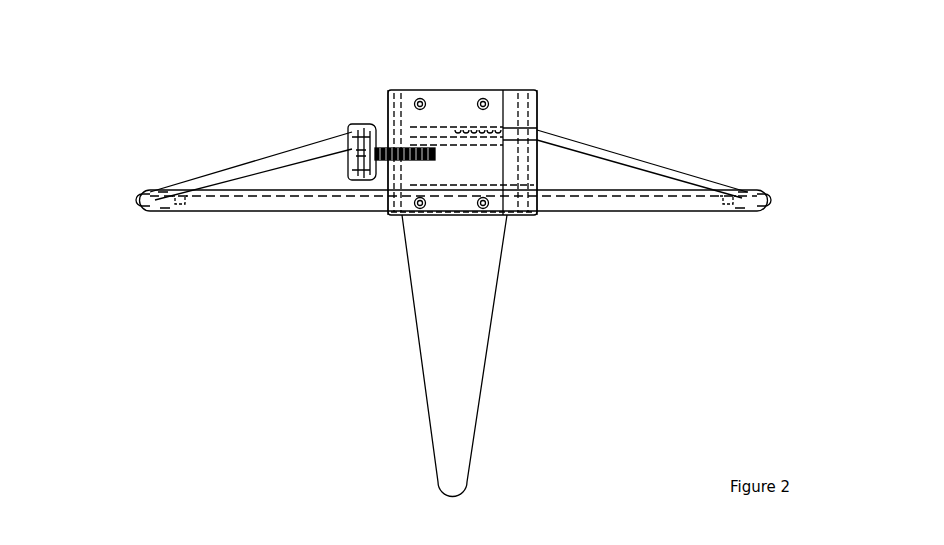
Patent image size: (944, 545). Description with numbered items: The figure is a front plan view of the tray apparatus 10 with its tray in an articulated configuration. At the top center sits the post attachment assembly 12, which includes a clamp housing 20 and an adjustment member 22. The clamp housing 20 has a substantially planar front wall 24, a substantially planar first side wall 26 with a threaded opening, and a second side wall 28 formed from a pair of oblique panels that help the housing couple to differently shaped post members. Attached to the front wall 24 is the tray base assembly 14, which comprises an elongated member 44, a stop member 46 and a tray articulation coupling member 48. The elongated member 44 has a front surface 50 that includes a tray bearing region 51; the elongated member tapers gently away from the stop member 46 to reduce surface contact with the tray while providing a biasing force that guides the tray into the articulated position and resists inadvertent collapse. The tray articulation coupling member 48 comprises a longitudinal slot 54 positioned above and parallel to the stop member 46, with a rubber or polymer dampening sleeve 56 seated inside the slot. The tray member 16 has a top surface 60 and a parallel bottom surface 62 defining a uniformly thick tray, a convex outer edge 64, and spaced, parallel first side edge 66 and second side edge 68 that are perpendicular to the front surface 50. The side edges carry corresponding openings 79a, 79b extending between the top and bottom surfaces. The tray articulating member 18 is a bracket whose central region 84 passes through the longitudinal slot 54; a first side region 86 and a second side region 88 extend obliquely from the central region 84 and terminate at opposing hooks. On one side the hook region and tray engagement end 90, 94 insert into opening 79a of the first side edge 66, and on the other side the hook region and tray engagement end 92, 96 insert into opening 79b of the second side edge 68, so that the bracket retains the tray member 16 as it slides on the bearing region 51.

The tray apparatus 10 is at (652, 120).
The post attachment assembly 12 is at (389, 92).
The tray base assembly 14 is at (424, 425).
The tray member 16 is at (577, 222).
The tray articulating member 18 is at (579, 140).
The clamp housing 20 is at (430, 87).
The adjustment member 22 is at (351, 122).
The front wall 24 is at (456, 80).
The first side wall 26 is at (379, 100).
The second side wall 28 is at (543, 109).
The elongated member 44 is at (479, 378).
The stop member 46 is at (481, 128).
The tray articulation coupling member 48 is at (490, 150).
The front surface 50 is at (431, 274).
The tray bearing region 51 is at (478, 322).
The longitudinal slot 54 is at (447, 120).
The dampening sleeve 56 is at (531, 96).
The top surface 60 is at (649, 163).
The bottom surface 62 is at (612, 213).
The outer edge 64 is at (318, 207).
The first side edge 66 is at (737, 213).
The second side edge 68 is at (176, 211).
The opening 79a is at (765, 208).
The opening 79b is at (147, 206).
The central region 84 is at (457, 125).
The first side region 86 is at (553, 118).
The second side region 88 is at (296, 150).
The right tip 90, 94 is at (765, 194).
The left tip 92, 96 is at (146, 194).